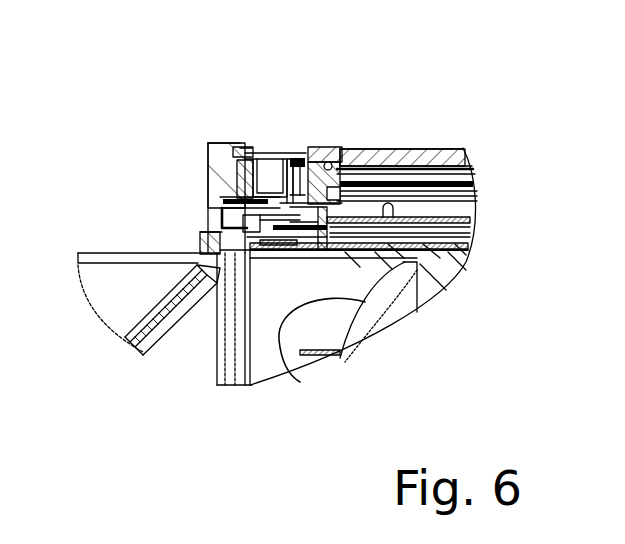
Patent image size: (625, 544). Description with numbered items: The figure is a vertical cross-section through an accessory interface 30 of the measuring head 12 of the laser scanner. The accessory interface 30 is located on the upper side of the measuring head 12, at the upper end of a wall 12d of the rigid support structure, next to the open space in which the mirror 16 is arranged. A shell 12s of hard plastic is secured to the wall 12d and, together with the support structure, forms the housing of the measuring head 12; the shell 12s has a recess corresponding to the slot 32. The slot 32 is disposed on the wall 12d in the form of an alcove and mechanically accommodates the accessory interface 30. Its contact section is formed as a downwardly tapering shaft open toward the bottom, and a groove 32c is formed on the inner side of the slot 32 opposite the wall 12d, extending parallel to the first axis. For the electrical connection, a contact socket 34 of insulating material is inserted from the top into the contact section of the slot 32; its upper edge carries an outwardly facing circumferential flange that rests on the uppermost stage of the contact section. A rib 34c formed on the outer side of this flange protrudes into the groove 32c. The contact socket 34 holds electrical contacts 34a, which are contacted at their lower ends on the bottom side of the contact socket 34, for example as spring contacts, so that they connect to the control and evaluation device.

The measuring head 12 is at (445, 147).
The shell 12s is at (400, 150).
The wall 12d is at (220, 232).
The mirror 16 is at (137, 275).
The accessory interface 30 is at (248, 148).
The slot 32 is at (333, 155).
The groove 32c is at (243, 174).
The contact socket 34 is at (253, 148).
The electrical contact 34a is at (297, 148).
The rib 34c is at (245, 152).